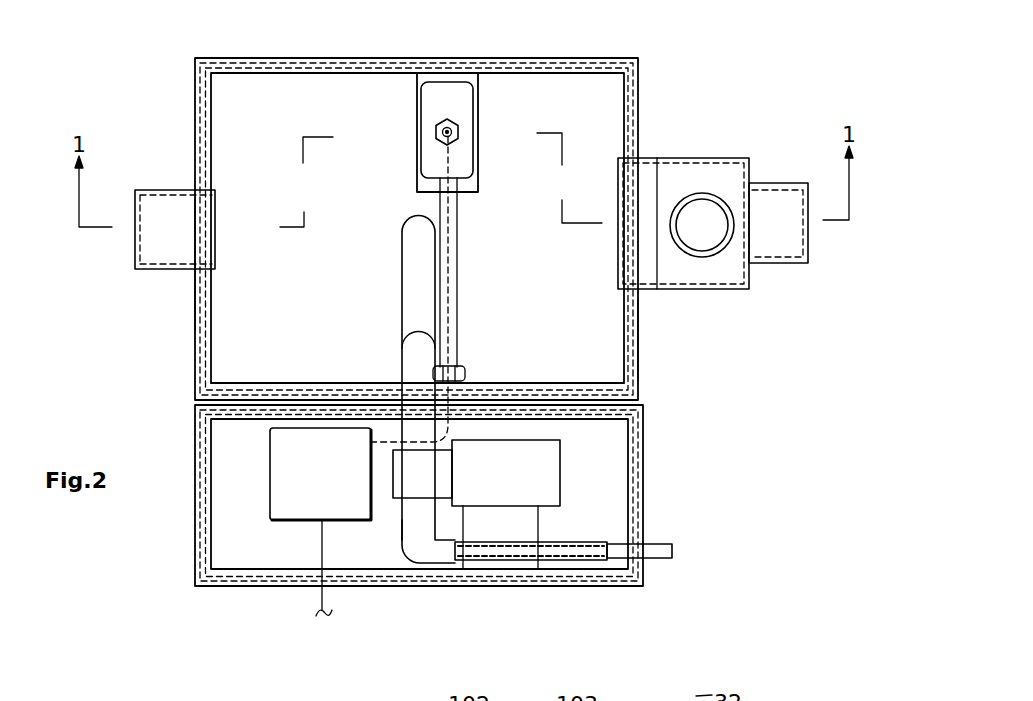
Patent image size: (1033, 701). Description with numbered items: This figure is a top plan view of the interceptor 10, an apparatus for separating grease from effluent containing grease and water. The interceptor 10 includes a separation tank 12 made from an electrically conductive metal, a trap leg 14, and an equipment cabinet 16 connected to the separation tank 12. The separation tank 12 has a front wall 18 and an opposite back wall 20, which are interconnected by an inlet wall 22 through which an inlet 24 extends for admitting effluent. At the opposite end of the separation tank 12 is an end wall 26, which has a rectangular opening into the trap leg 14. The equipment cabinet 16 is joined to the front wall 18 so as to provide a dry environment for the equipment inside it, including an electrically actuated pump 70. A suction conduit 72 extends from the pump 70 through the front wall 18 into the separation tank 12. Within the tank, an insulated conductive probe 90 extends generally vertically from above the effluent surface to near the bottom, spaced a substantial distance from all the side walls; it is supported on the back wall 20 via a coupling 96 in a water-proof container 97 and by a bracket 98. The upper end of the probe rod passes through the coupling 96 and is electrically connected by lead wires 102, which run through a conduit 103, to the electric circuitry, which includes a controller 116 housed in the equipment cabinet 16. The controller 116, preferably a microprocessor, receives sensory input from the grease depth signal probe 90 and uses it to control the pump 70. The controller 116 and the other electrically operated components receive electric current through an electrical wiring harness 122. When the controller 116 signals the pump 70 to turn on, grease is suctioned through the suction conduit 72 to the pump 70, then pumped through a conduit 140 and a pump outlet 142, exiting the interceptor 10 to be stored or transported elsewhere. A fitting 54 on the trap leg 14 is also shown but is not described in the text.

The interceptor 10 is at (152, 379).
The separation tank 12 is at (646, 81).
The trap leg 14 is at (691, 152).
The equipment cabinet 16 is at (195, 553).
The front wall 18 is at (289, 385).
The back wall 20 is at (310, 75).
The inlet wall 22 is at (195, 322).
The inlet 24 is at (165, 190).
The end wall 26 is at (640, 352).
The outlet pipe 54 is at (775, 264).
The pump 70 is at (562, 486).
The suction conduit 72 is at (402, 248).
The probe 90 is at (428, 126).
The coupling 96 is at (458, 130).
The water-proof container 97 is at (437, 100).
The bracket 98 is at (417, 191).
The lead wires 102 is at (457, 324).
The conduit 103 is at (458, 284).
The controller 116 is at (266, 483).
The electrical wiring harness 122 is at (320, 600).
The conduit 140 is at (590, 542).
The pump outlet 142 is at (660, 553).